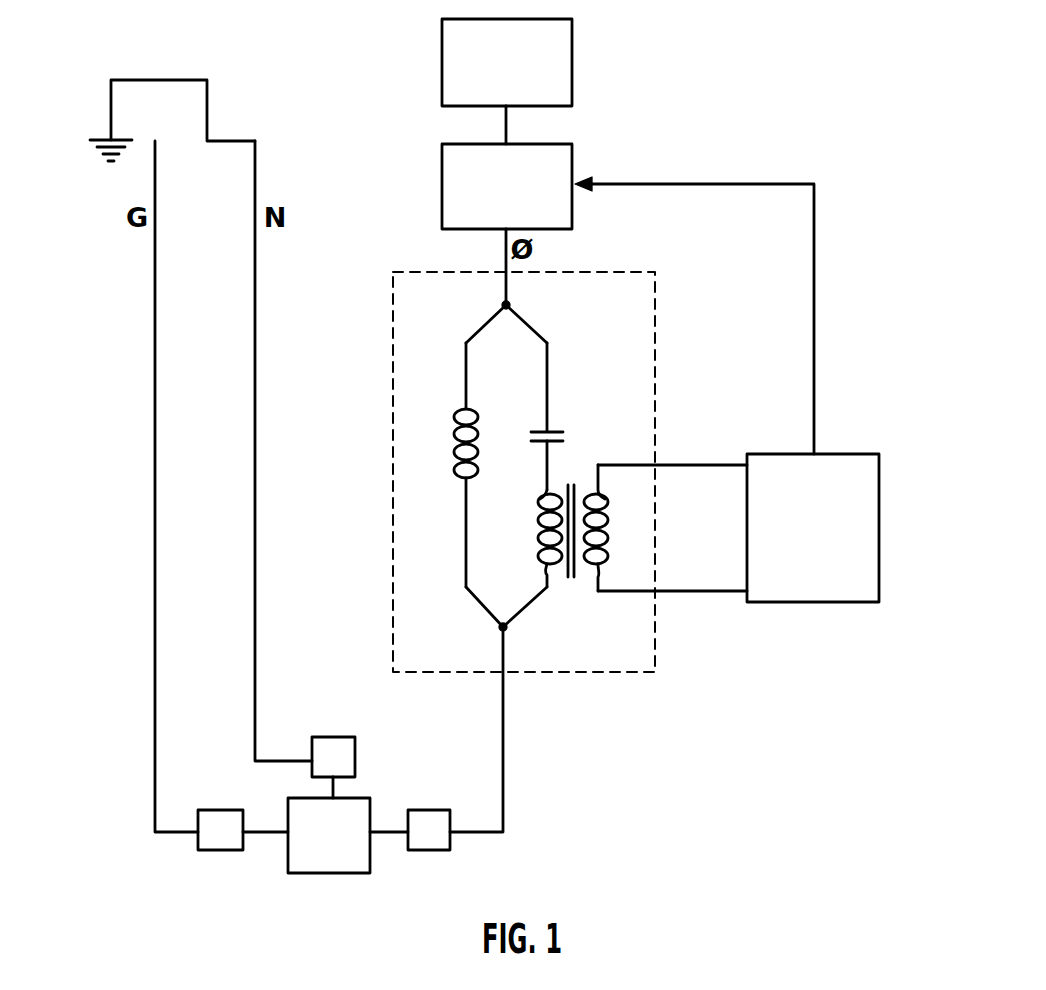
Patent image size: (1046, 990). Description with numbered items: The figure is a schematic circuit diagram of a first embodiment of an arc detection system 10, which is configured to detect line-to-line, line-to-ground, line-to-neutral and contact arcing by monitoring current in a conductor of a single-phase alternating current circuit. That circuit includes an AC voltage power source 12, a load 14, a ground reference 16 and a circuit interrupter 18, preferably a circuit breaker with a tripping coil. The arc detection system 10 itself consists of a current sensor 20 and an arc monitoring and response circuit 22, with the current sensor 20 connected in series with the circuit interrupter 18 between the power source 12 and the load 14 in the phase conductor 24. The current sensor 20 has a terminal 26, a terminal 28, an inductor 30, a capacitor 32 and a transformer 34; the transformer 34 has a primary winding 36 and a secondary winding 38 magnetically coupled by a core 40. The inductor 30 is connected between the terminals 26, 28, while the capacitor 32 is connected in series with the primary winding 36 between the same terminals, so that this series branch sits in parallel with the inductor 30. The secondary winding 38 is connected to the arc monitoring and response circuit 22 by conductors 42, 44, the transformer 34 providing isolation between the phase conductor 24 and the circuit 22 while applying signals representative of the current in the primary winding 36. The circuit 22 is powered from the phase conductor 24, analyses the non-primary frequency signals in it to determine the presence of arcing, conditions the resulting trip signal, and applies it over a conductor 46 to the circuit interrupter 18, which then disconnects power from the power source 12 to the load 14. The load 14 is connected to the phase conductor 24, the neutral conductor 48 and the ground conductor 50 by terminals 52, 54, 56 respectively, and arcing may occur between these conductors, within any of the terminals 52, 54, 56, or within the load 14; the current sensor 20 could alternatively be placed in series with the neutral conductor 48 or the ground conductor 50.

The arc detection system 10 is at (622, 714).
The power source 12 is at (575, 37).
The load 14 is at (370, 815).
The ground reference 16 is at (106, 130).
The circuit interrupter 18 is at (575, 165).
The current sensor 20 is at (542, 695).
The arc monitoring and response circuit 22 is at (879, 470).
The phase conductor 24 is at (503, 701).
The terminal 26 is at (503, 304).
The terminal 28 is at (500, 628).
The inductor 30 is at (476, 408).
The capacitor 32 is at (550, 430).
The transformer 34 is at (592, 600).
The primary winding 36 is at (538, 557).
The secondary winding 38 is at (668, 538).
The core 40 is at (574, 580).
The conductor 42 is at (722, 465).
The conductor 44 is at (730, 592).
The conductor 46 is at (814, 343).
The neutral conductor 48 is at (257, 393).
The ground conductor 50 is at (153, 393).
The terminal 52 is at (450, 820).
The terminal 54 is at (355, 745).
The terminal 56 is at (243, 820).